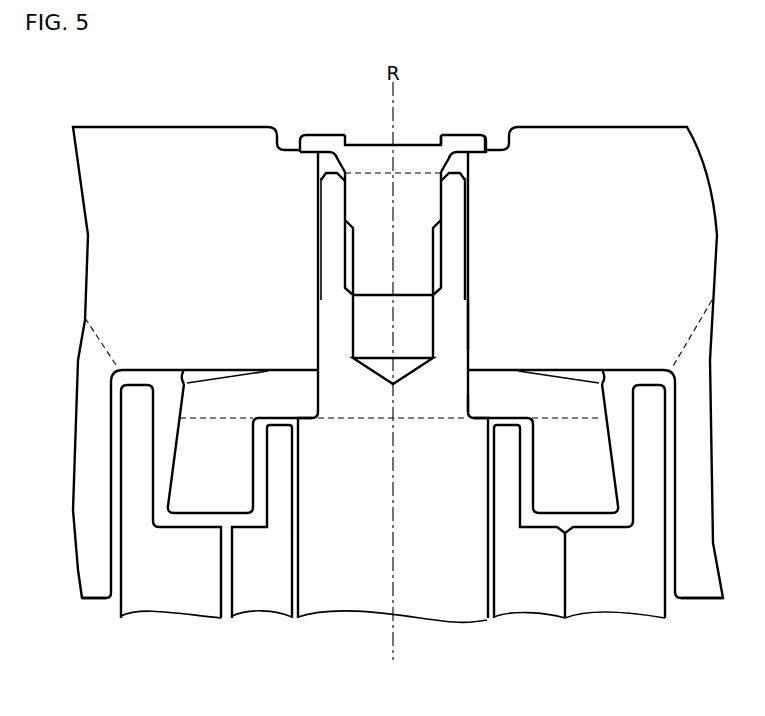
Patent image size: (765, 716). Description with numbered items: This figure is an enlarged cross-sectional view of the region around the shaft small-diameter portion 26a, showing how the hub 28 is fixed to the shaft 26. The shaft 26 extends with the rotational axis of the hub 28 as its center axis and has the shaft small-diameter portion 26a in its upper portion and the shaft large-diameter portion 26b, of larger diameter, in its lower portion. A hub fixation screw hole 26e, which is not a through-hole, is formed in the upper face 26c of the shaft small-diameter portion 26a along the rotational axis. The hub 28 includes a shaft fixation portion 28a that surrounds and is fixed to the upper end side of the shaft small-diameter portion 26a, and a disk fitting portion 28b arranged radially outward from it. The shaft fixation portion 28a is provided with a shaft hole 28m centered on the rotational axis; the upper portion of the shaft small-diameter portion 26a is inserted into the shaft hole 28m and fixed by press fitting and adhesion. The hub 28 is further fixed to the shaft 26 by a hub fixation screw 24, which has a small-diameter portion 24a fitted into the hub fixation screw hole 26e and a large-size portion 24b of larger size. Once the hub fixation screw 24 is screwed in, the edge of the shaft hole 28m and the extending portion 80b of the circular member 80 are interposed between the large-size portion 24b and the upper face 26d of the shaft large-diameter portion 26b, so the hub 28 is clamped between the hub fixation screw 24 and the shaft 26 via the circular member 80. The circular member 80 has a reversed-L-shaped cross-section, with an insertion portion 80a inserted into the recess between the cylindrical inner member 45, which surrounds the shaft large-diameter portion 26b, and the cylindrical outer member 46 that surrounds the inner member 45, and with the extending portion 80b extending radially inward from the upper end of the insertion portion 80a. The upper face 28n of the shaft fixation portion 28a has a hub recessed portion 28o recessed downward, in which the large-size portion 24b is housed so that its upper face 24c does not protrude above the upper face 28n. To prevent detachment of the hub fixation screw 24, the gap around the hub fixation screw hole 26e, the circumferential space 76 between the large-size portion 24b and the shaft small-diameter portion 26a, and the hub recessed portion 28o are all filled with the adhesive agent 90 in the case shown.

The hub fixation screw 24 is at (355, 200).
The small-diameter portion 24a is at (428, 205).
The large-size portion 24b is at (459, 143).
The upper face 24c is at (453, 135).
The shaft 26 is at (393, 387).
The shaft small-diameter portion 26a is at (460, 325).
The shaft large-diameter portion 26b is at (330, 485).
The upper face 26c is at (323, 172).
The upper face 26d is at (467, 397).
The hub fixation screw hole 26e is at (428, 268).
The hub 28 is at (178, 148).
The shaft fixation portion 28a is at (222, 148).
The disk fitting portion 28b is at (95, 583).
The shaft hole 28m is at (330, 285).
The upper face 28n is at (573, 128).
The hub recessed portion 28o is at (288, 137).
The inner member 45 is at (262, 602).
The outer member 46 is at (178, 602).
The circumferential space 76 is at (330, 165).
The circular member 80 is at (216, 392).
The insertion portion 80a is at (193, 441).
The extending portion 80b is at (258, 388).
The adhesive agent 90 is at (326, 157).